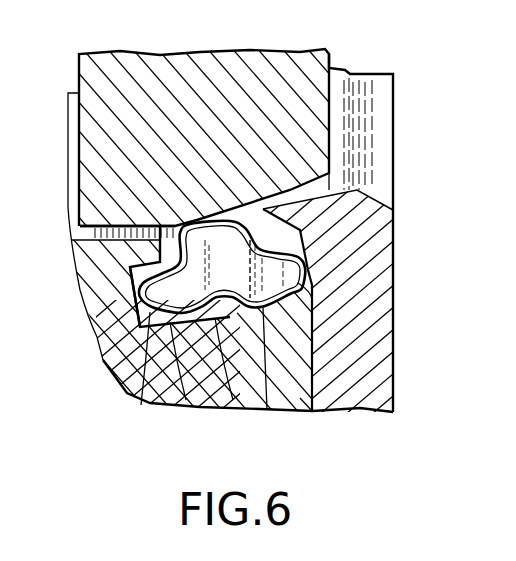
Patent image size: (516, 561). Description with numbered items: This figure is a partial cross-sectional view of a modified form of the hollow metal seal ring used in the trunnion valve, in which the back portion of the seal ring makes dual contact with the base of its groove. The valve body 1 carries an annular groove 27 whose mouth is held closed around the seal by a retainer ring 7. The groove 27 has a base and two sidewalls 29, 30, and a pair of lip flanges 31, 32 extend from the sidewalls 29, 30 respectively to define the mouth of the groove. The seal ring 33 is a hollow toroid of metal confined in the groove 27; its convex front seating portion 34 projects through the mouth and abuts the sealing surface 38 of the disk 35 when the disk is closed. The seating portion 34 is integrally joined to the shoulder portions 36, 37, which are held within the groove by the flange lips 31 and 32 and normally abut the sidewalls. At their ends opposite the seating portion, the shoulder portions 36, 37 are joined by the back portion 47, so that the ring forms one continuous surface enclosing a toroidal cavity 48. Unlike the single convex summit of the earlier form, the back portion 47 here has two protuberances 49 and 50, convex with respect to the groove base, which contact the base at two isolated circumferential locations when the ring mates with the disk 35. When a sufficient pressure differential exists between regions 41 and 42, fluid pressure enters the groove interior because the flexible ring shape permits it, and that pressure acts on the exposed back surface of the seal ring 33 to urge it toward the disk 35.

The valve body 1 is at (300, 400).
The retainer ring 7 is at (360, 393).
The groove 27 is at (163, 338).
The sidewall 29 is at (122, 280).
The sidewall 30 is at (312, 298).
The lip flange 31 is at (108, 262).
The lip flange 32 is at (300, 226).
The seal ring 33 is at (172, 222).
The seating portion 34 is at (190, 221).
The disk 35 is at (211, 80).
The shoulder portion 36 is at (150, 298).
The shoulder portion 37 is at (286, 265).
The sealing surface 38 is at (290, 196).
The region 41 is at (85, 238).
The region 42 is at (387, 139).
The back portion 47 is at (231, 400).
The toroidal cavity 48 is at (187, 398).
The protuberance 49 is at (141, 405).
The protuberance 50 is at (267, 408).